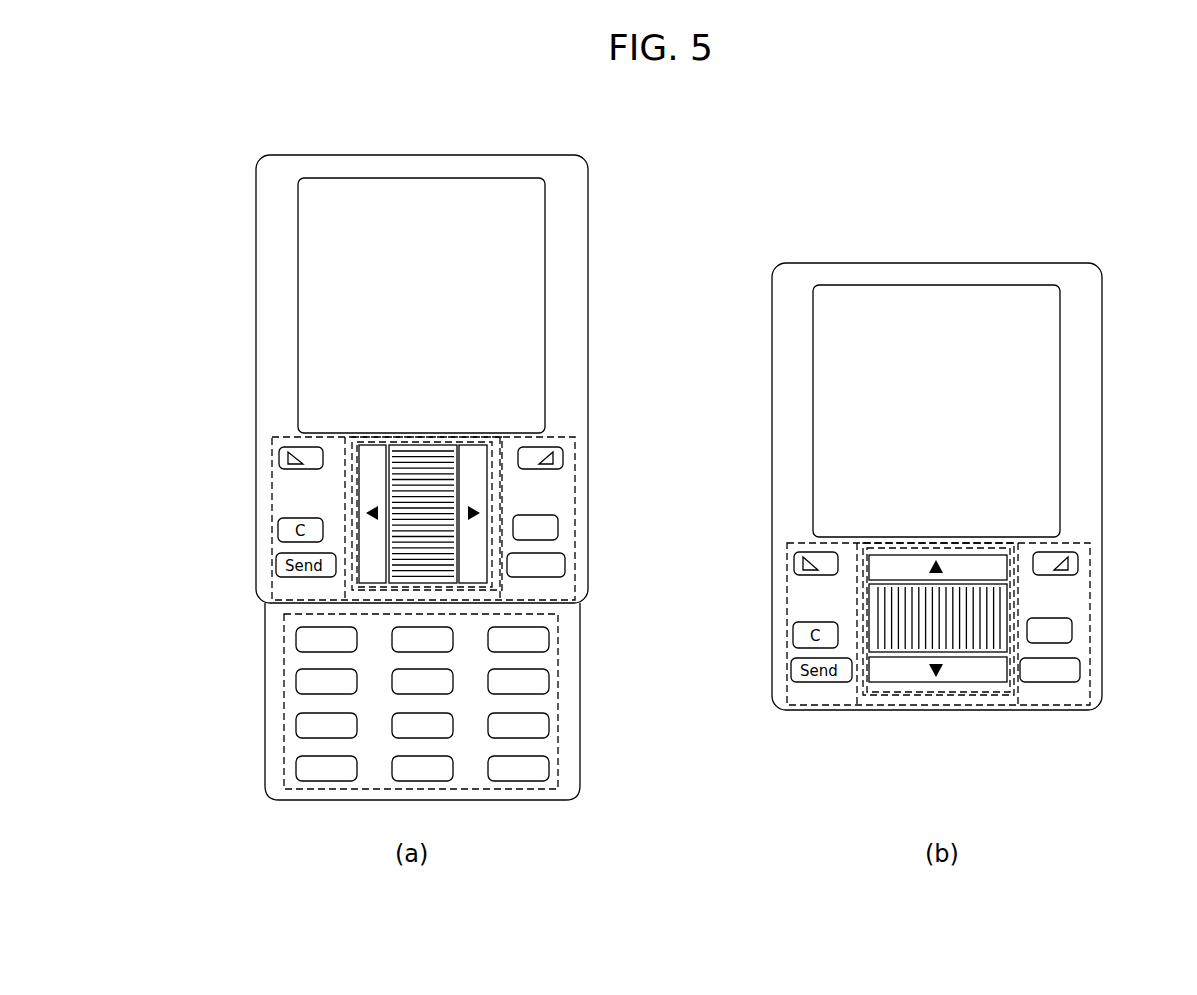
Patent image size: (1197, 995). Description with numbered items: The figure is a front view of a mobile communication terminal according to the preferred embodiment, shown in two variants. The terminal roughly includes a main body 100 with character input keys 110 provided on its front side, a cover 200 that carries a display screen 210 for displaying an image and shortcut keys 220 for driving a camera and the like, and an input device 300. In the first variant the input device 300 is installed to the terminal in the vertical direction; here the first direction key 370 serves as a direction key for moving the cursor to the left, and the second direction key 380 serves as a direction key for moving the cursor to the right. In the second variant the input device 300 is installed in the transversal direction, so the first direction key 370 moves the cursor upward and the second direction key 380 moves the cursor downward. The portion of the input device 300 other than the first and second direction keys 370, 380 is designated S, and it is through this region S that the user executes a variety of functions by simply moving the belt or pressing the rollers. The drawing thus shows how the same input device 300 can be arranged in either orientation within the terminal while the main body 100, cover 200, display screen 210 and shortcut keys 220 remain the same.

The main body 100 is at (252, 766).
The character input keys 110 is at (560, 722).
The cover 200 is at (481, 148).
The display screen 210 is at (531, 246).
The shortcut keys 220 is at (577, 467).
The input device 300 is at (586, 555).
The first direction key 370 is at (372, 497).
The second direction key 380 is at (477, 502).
The rest of the input device S is at (397, 578).